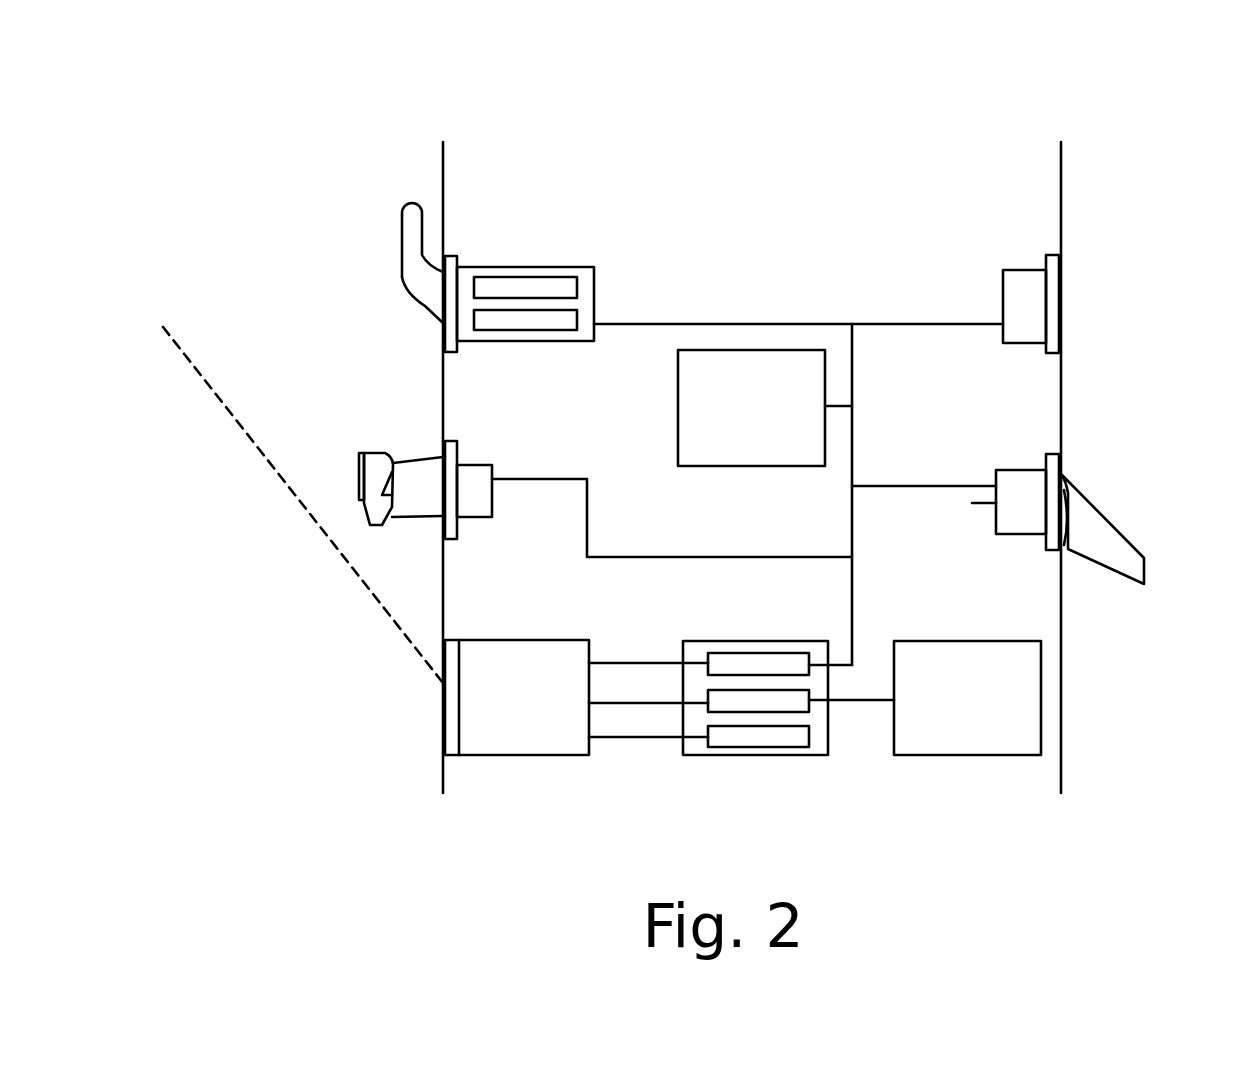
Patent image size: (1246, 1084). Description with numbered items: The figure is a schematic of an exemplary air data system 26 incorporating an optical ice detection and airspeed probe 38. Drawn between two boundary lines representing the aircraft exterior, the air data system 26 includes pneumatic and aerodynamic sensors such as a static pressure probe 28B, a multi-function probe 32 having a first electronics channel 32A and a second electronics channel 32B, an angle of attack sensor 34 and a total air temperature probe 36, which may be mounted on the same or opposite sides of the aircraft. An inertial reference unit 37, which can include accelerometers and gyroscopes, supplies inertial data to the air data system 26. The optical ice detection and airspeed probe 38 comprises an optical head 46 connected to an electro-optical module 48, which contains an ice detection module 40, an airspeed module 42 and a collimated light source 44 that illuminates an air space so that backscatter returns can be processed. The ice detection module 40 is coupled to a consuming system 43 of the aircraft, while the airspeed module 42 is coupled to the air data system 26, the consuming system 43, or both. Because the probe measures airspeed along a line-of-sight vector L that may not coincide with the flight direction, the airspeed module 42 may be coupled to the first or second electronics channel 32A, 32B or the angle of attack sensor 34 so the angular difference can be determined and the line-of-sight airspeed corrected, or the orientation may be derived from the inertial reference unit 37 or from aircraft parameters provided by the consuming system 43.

The air data system 26 is at (947, 160).
The static pressure probe 28B is at (1055, 300).
The multi-function probe 32 is at (412, 297).
The first electronics channel 32A is at (538, 330).
The second electronics channel 32B is at (537, 277).
The angle of attack sensor 34 is at (1146, 570).
The total air temperature probe 36 is at (378, 452).
The inertial reference unit 37 is at (738, 417).
The optical ice detection and airspeed probe 38 is at (552, 782).
The ice detection module 40 is at (810, 707).
The airspeed module 42 is at (757, 653).
The consuming system 43 is at (949, 712).
The collimated light source 44 is at (793, 747).
The optical head 46 is at (500, 757).
The electro-optical module 48 is at (750, 757).
The line-of-sight vector L is at (283, 483).